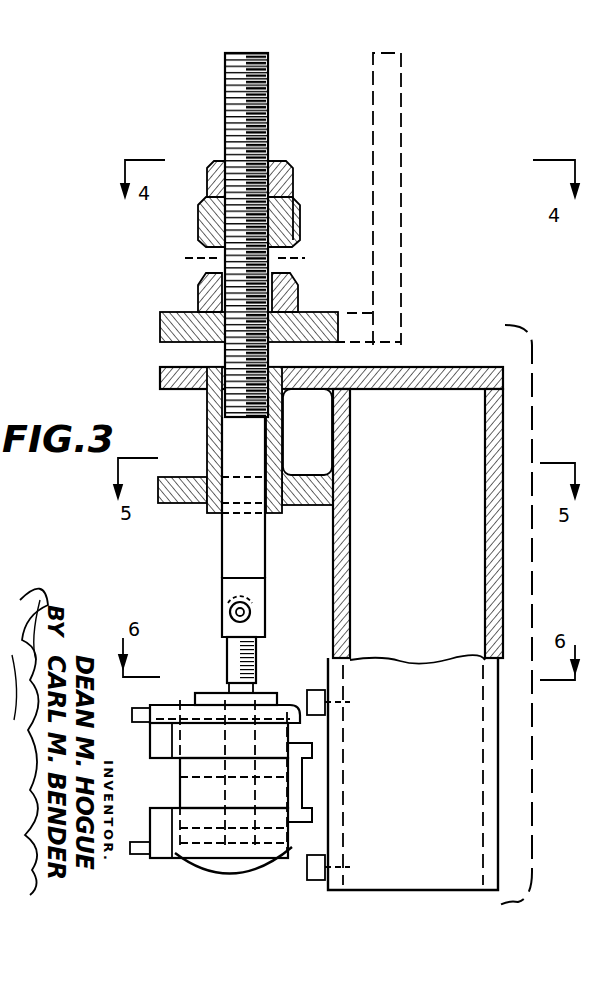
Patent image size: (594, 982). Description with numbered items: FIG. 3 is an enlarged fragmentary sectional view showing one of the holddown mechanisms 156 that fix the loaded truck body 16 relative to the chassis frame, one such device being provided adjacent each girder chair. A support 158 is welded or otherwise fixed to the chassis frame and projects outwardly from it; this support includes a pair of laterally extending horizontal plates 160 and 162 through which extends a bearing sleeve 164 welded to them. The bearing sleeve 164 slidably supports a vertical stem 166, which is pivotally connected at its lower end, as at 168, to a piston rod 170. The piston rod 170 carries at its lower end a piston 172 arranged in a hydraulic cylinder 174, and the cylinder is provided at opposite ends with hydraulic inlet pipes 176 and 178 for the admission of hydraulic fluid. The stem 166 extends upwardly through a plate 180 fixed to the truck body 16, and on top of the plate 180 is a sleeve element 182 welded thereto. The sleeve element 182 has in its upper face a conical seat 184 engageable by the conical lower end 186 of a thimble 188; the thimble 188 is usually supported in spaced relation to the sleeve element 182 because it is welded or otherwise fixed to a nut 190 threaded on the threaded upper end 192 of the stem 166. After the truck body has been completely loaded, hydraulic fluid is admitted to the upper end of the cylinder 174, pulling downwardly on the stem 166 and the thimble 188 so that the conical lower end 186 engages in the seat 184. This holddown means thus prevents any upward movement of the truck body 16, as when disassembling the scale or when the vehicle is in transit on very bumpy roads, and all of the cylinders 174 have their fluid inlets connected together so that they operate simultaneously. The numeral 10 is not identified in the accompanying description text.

The wall 10 is at (497, 347).
The truck body 16 is at (372, 157).
The holddown mechanism 156 is at (224, 96).
The support 158 is at (322, 566).
The horizontal plate 160 is at (160, 378).
The horizontal plate 162 is at (180, 477).
The bearing sleeve 164 is at (207, 415).
The vertical stem 166 is at (220, 538).
The pivotal connection 168 is at (228, 612).
The piston rod 170 is at (225, 688).
The piston 172 is at (280, 793).
The hydraulic cylinder 174 is at (300, 777).
The hydraulic inlet pipe 176 is at (155, 711).
The hydraulic inlet pipe 178 is at (135, 840).
The plate 180 is at (317, 310).
The sleeve element 182 is at (197, 307).
The conical seat 184 is at (290, 277).
The conical lower end 186 is at (213, 240).
The thimble 188 is at (297, 207).
The nut 190 is at (285, 163).
The threaded upper end 192 is at (272, 100).